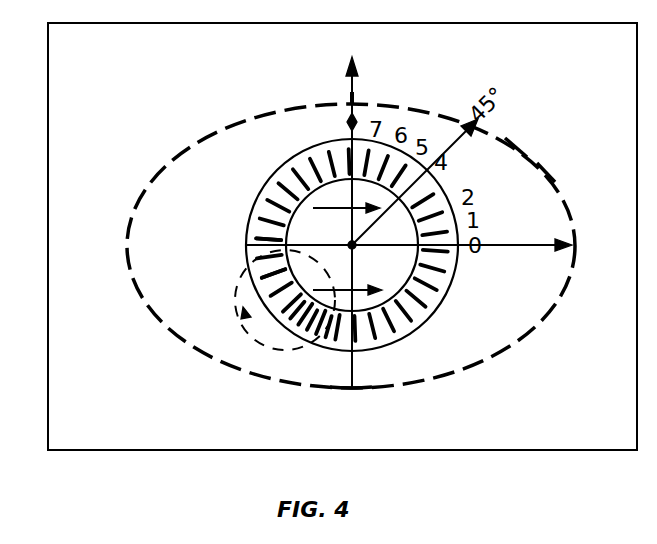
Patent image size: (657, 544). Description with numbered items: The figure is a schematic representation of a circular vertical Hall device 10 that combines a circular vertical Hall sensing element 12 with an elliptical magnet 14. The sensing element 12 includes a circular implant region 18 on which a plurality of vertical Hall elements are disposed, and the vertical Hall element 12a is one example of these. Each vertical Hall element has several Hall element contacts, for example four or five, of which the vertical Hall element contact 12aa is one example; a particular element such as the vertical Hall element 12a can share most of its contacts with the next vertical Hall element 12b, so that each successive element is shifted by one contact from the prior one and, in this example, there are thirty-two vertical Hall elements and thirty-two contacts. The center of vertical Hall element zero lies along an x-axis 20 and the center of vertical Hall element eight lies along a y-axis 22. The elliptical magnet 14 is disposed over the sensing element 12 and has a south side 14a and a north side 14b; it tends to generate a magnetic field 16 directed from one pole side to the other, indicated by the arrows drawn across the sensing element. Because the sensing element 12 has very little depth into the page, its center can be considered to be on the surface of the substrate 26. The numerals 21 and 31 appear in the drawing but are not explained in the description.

The circular vertical Hall device 10 is at (493, 83).
The circular vertical Hall sensing element 12 is at (507, 138).
The vertical Hall element 12a is at (240, 278).
The vertical Hall element contact 12aa is at (248, 241).
The next vertical Hall element 12b is at (262, 349).
The elliptical magnet 14 is at (483, 200).
The south side 14a is at (493, 222).
The north side 14b is at (353, 388).
The magnetic field 16 is at (330, 198).
The circular implant region 18 is at (492, 172).
The x-axis 20 is at (553, 234).
The rotation center 21 is at (349, 247).
The y-axis 22 is at (357, 85).
The substrate 26 is at (591, 431).
The position mark 31 is at (476, 268).